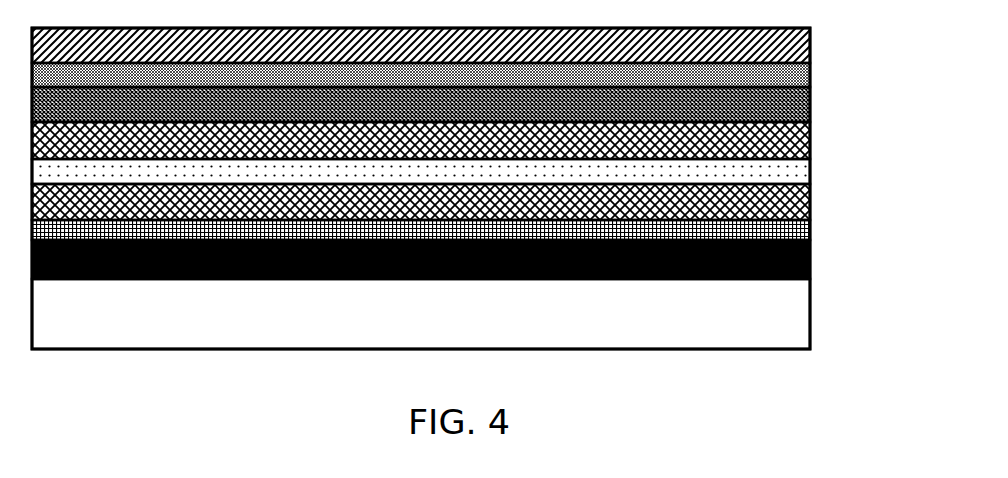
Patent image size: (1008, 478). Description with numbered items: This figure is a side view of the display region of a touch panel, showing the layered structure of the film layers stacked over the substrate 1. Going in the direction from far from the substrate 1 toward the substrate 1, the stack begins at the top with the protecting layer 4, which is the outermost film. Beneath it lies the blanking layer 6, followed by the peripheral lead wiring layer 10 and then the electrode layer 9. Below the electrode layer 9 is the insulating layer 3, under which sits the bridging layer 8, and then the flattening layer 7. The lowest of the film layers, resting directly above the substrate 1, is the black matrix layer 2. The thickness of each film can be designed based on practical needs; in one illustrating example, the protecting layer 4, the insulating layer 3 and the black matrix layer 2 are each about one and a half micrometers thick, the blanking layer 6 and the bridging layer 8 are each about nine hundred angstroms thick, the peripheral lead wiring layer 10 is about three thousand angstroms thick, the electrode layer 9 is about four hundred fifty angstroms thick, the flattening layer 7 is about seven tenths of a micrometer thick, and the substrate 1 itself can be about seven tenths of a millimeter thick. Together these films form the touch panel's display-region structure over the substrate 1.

The substrate 1 is at (688, 313).
The black matrix layer 2 is at (688, 259).
The flattening layer 7 is at (688, 229).
The bridging layer 8 is at (688, 200).
The insulating layer 3 is at (688, 171).
The electrode layer 9 is at (688, 142).
The peripheral lead wiring layer 10 is at (688, 105).
The blanking layer 6 is at (688, 73).
The protecting layer 4 is at (688, 45).